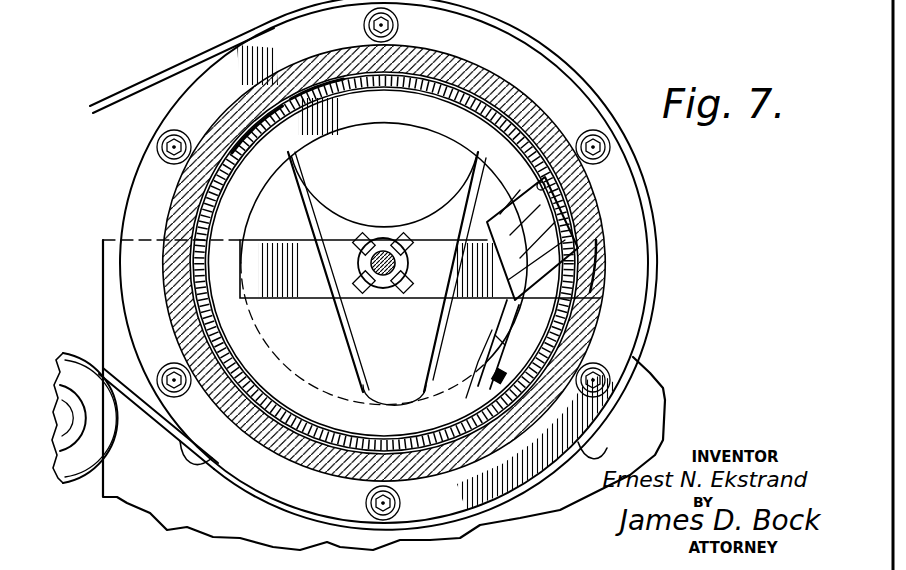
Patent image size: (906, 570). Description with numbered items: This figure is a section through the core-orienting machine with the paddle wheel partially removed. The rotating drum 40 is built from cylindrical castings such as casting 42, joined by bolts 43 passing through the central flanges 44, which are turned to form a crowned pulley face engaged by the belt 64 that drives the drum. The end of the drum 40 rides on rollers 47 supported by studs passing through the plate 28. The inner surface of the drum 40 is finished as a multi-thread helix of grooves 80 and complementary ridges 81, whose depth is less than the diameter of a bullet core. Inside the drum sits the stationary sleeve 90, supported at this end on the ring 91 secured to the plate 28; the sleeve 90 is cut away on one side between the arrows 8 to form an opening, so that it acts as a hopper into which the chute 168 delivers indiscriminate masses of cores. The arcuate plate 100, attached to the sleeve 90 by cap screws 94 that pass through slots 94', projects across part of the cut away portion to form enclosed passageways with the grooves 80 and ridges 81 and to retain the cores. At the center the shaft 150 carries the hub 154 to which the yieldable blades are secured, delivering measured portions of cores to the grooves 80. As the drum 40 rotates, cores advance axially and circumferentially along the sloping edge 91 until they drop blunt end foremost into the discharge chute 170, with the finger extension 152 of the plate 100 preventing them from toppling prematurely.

The arrows 8— 8 is at (482, 123).
The plate 28 is at (645, 377).
The drum 40 is at (384, 263).
The cylindrical casting 42 is at (600, 252).
The bolts 43 is at (399, 26).
The central flanges 44 is at (533, 62).
The rollers 47 is at (185, 463).
The belt 64 is at (160, 84).
The grooves 80 is at (384, 263).
The ridges 81 is at (288, 120).
The sleeve 90 is at (383, 263).
The ring / cut away edge of sleeve 91 is at (469, 264).
The cap screws 94 is at (492, 344).
The slots 94' is at (475, 355).
The arcuate plate 100 is at (493, 378).
The shaft 150 is at (386, 252).
The finger extension 152 is at (545, 187).
The hub 154 is at (358, 259).
The chute 168 is at (296, 162).
The discharge chute 170 is at (535, 221).